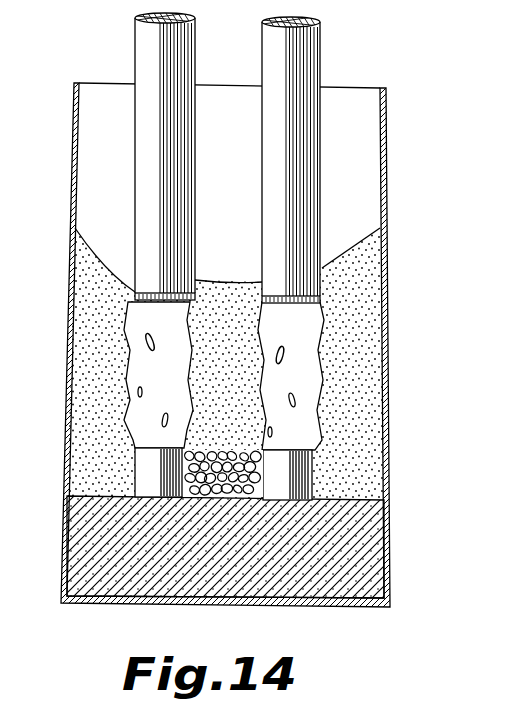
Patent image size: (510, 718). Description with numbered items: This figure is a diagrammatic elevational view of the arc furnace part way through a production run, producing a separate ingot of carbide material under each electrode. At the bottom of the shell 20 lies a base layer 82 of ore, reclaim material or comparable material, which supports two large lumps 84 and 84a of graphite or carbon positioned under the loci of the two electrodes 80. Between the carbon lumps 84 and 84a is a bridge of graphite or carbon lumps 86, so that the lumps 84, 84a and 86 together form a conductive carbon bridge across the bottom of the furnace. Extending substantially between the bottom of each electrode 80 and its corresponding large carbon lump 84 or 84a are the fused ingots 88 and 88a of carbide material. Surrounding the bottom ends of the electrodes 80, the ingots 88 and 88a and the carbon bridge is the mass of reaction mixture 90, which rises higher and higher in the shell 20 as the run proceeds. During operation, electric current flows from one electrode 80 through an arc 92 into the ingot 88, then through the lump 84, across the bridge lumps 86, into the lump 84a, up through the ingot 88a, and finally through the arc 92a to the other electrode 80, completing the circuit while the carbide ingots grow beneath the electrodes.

The shell 20 is at (388, 415).
The electrodes 80 is at (273, 50).
The base layer 82 is at (372, 552).
The large lump of graphite or carbon 84 is at (137, 467).
The large lump of graphite or carbon 84a is at (305, 485).
The bridge of graphite or carbon lumps 86 is at (223, 463).
The fused ingot of carbide material 88 is at (132, 382).
The fused ingot of carbide material 88a is at (308, 373).
The mass of reaction mixture 90 is at (360, 452).
The arc 92 is at (185, 283).
The arc 92a is at (322, 306).